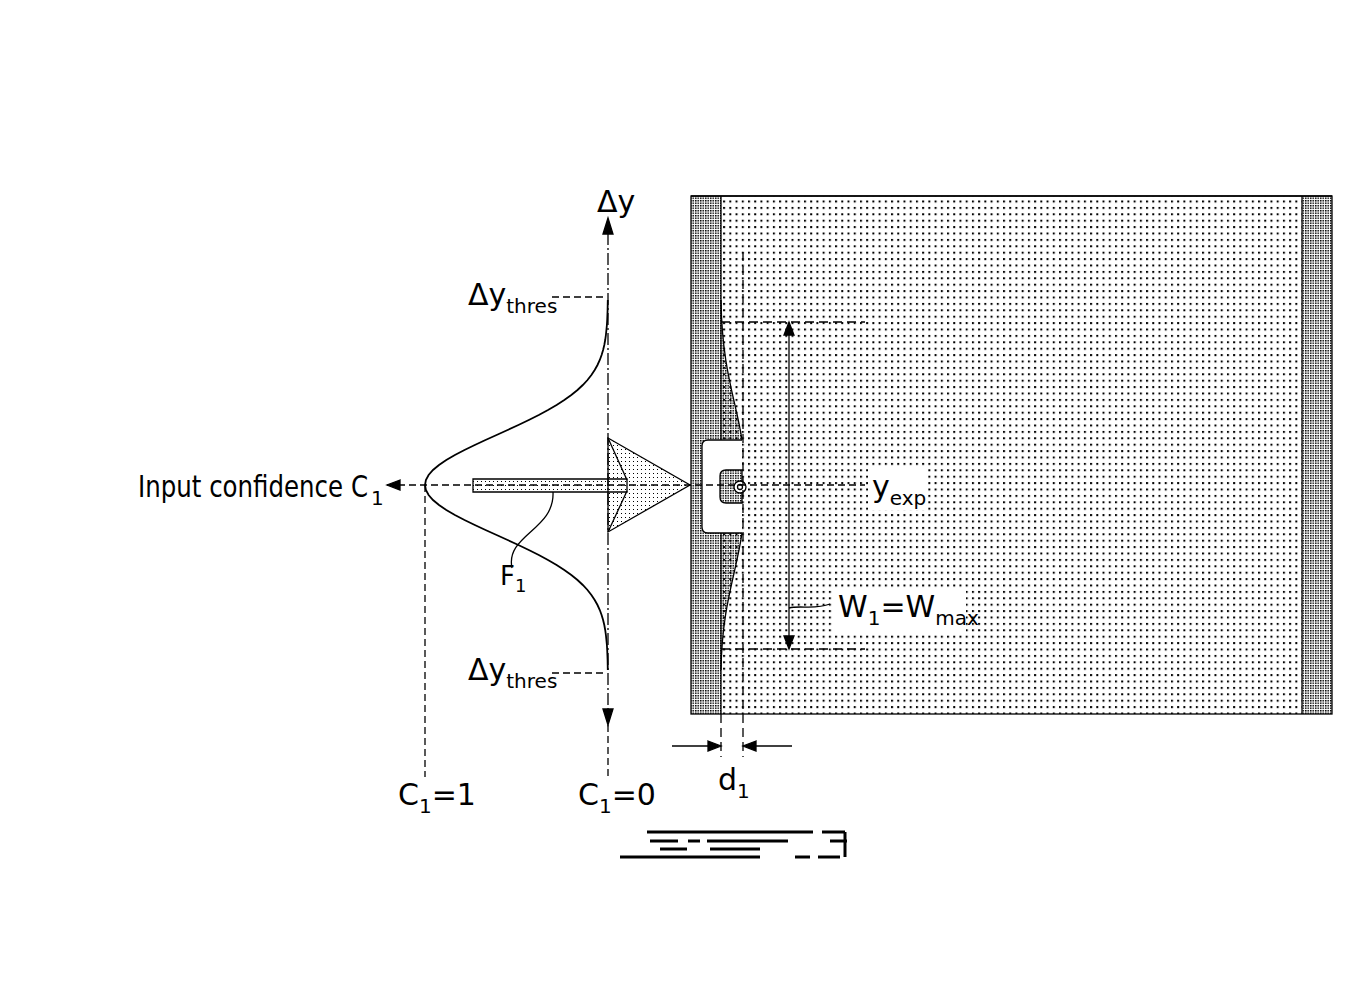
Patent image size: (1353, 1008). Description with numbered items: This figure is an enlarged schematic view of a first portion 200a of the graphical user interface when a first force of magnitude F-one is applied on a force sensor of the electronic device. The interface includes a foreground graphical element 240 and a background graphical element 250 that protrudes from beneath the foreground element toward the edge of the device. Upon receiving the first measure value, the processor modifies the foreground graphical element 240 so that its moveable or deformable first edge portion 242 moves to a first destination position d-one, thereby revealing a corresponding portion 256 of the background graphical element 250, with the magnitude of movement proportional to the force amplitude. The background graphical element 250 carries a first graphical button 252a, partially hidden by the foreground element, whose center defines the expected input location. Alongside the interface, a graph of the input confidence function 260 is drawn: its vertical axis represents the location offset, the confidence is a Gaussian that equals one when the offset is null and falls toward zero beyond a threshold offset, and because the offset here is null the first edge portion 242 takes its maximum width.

The first portion of the graphical user interface 200a is at (1142, 192).
The foreground graphical element 240 is at (975, 222).
The background graphical element 250 is at (705, 196).
The first edge portion 242 is at (728, 363).
The first graphical button 252a is at (712, 452).
The corresponding portion of the background graphical element 256 is at (705, 522).
The input confidence function 260 is at (462, 452).